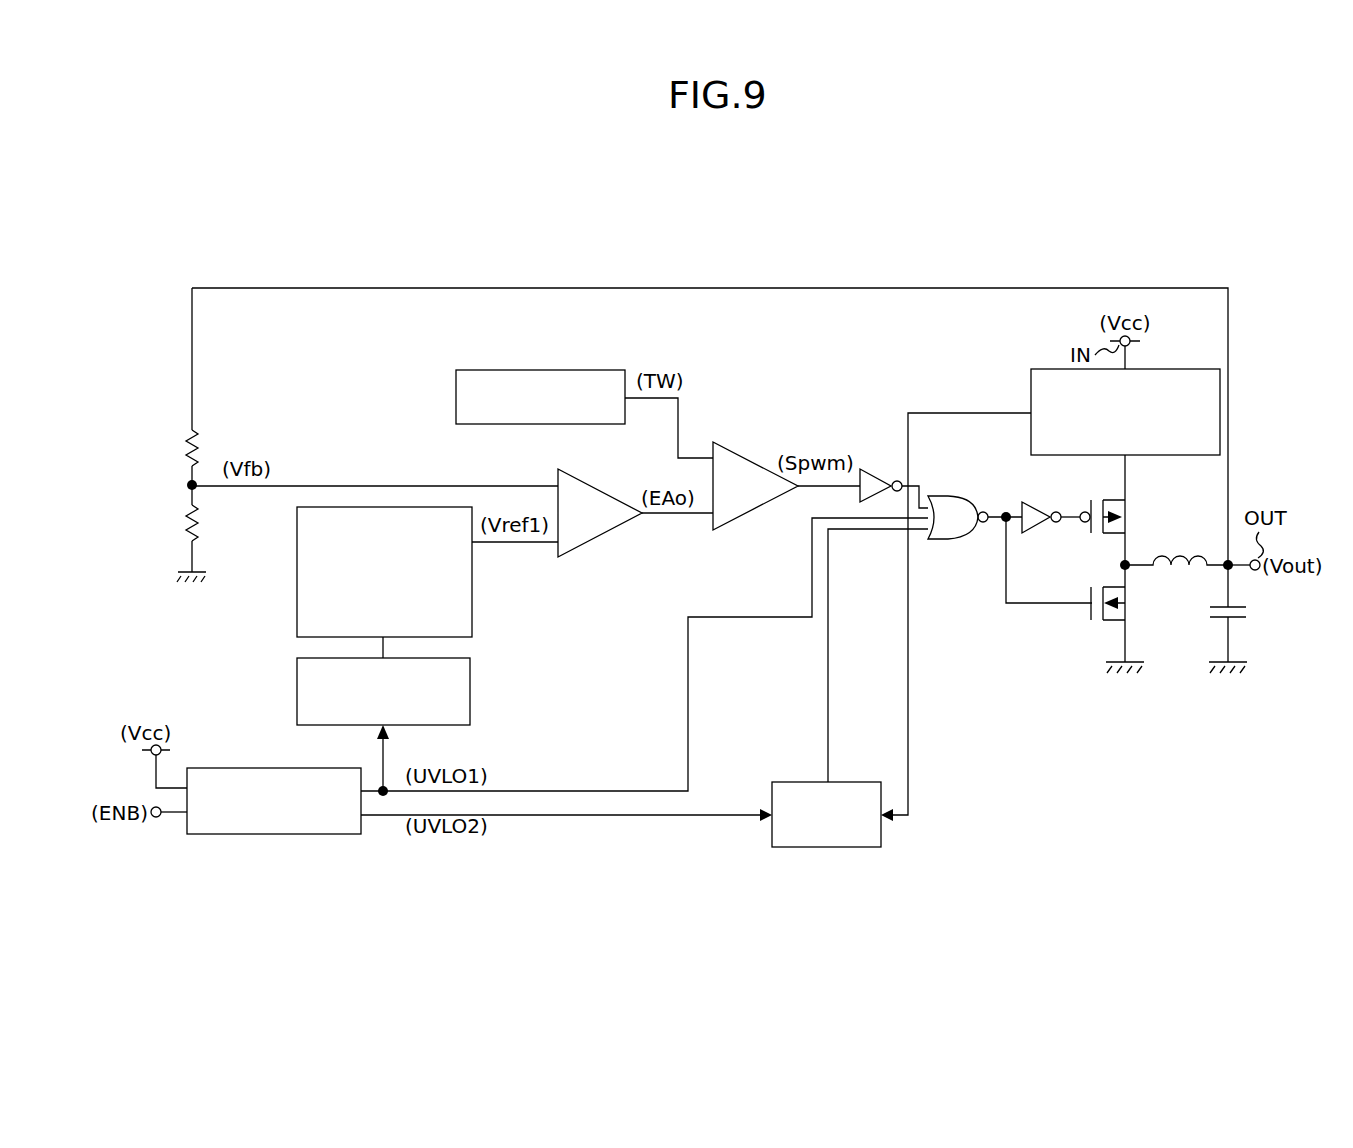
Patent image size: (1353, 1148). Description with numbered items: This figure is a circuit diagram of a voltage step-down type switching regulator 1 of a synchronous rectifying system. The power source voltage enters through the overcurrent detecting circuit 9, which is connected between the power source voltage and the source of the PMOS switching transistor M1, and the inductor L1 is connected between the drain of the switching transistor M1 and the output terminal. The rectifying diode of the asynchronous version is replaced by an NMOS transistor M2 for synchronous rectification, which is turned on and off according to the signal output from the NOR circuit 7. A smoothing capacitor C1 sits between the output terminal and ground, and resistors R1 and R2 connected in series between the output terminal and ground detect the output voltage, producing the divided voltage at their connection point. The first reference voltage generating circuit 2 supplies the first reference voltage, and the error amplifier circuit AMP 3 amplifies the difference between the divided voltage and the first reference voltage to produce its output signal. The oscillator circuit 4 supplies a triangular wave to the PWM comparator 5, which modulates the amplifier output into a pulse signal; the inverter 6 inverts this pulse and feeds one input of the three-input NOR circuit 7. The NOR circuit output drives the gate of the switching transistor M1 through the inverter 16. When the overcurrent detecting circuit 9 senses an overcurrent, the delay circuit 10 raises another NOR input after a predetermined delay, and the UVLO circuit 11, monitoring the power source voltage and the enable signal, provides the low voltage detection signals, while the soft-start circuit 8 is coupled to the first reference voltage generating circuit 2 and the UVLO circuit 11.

The switching regulator 1 is at (1060, 236).
The first reference voltage generating circuit 2 is at (297, 575).
The error amplifier circuit AMP 3 is at (607, 489).
The oscillator circuit 4 is at (544, 370).
The PWM comparator 5 is at (759, 465).
The inverter 6 is at (877, 477).
The NOR circuit 7 is at (953, 495).
The soft-start circuit 8 is at (297, 690).
The overcurrent detecting circuit 9 is at (1183, 369).
The delay circuit 10 is at (800, 782).
The UVLO circuit 11 is at (278, 834).
The inverter 16 is at (1039, 510).
The resistor R1 is at (170, 448).
The resistor R2 is at (170, 523).
The switching transistor M1 is at (1107, 502).
The NMOS transistor for synchronous rectification M2 is at (1107, 619).
The inductor L1 is at (1176, 543).
The smoothing capacitor C1 is at (1211, 613).